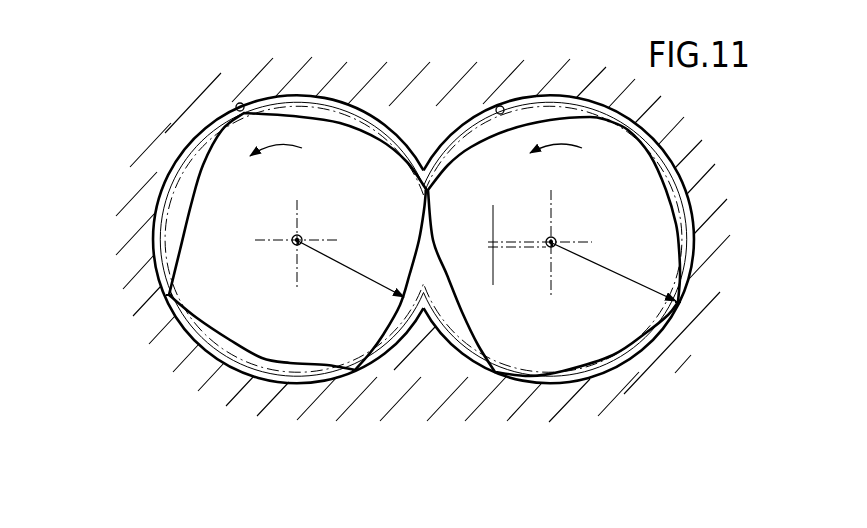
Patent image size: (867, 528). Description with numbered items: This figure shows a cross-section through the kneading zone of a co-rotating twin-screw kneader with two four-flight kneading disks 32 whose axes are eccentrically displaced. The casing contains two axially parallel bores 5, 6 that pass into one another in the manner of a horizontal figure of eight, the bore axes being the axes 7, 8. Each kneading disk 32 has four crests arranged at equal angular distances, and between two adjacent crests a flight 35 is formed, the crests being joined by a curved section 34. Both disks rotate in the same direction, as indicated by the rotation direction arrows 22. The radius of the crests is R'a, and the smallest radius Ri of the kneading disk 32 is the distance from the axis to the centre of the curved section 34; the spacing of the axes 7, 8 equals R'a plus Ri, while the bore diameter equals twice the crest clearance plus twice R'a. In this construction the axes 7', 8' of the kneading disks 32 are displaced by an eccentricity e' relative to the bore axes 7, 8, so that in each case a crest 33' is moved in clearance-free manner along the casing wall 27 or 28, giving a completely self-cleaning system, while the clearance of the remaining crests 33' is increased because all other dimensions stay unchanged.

The bore 5 is at (648, 357).
The bore 6 is at (203, 363).
The axis of bore 7 is at (540, 243).
The axis of kneading disk 7' is at (565, 268).
The axis of bore 8 is at (297, 245).
The axis of kneading disk 8' is at (308, 265).
The rotation direction arrow 22 is at (416, 162).
The casing wall 27 is at (501, 106).
The casing wall 28 is at (241, 103).
The kneading disk 32 is at (226, 304).
The crest 33' is at (424, 382).
The curved section 34 is at (198, 168).
The flight 35 is at (347, 120).
The smallest radius of kneading disk Ri is at (351, 269).
The radius of crests R'a is at (614, 272).
The eccentricity e' is at (507, 245).